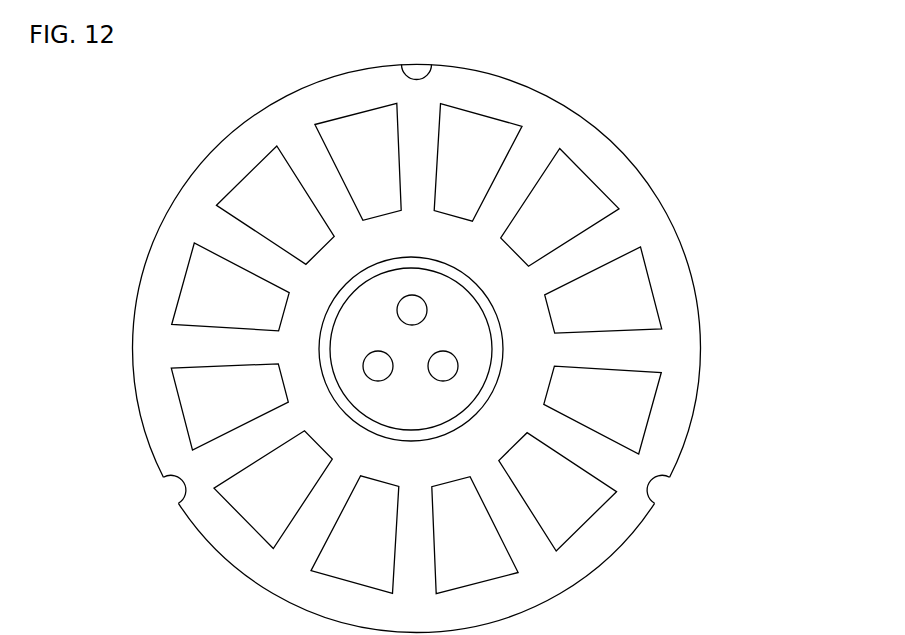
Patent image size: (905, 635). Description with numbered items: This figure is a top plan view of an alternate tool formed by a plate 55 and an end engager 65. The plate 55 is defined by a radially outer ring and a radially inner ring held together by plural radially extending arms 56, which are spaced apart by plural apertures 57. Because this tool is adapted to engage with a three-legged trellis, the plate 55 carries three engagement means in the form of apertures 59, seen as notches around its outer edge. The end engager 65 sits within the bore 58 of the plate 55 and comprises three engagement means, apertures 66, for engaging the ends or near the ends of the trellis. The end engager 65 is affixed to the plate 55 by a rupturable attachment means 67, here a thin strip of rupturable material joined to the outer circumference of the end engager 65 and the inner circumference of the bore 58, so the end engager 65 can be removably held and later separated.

The plate 55 is at (147, 185).
The radially extending arms 56 is at (235, 243).
The apertures 57 is at (207, 303).
The bore 58 is at (353, 416).
The engagement means apertures 59 is at (670, 498).
The end engager 65 is at (448, 300).
The engagement means apertures 66 is at (448, 352).
The rupturable attachment means 67 is at (495, 355).